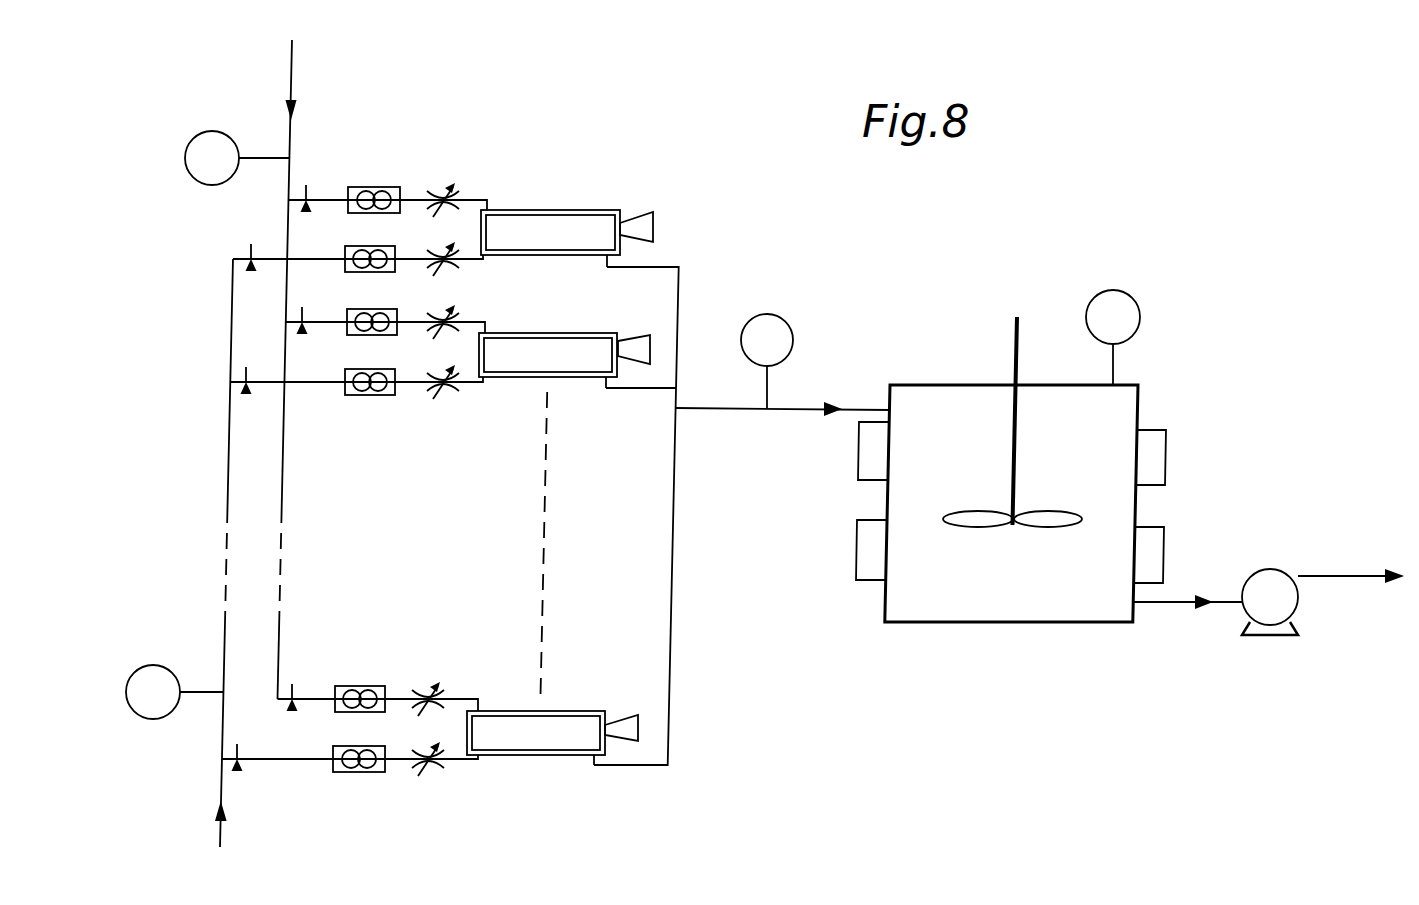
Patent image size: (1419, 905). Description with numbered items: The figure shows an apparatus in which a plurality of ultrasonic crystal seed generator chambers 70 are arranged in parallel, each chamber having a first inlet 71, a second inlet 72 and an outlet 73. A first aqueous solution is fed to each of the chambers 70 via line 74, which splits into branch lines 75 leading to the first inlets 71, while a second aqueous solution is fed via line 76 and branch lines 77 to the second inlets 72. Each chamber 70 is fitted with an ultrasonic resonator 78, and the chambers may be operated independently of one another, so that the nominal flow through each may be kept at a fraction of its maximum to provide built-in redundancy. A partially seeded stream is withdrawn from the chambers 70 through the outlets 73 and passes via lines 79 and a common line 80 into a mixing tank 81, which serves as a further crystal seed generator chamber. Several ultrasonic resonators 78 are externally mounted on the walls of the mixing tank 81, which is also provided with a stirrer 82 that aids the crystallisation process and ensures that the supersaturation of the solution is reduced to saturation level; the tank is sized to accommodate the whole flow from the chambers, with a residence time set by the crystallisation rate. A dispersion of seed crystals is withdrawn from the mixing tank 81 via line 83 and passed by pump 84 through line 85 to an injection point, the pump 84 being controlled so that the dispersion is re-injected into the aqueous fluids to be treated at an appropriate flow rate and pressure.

The ultrasonic crystal seed generator chamber 70 is at (560, 333).
The first inlet 71 is at (493, 210).
The second inlet 72 is at (497, 256).
The outlet 73 is at (602, 258).
The line 74 is at (293, 65).
The branch lines 75 is at (318, 193).
The line 76 is at (217, 833).
The branch lines 77 is at (298, 263).
The ultrasonic resonator 78 is at (653, 343).
The lines 79 is at (628, 268).
The line 80 is at (730, 410).
The mixing tank 81 is at (1140, 408).
The stirrer 82 is at (1018, 358).
The line 83 is at (1163, 608).
The pump 84 is at (1270, 583).
The line 85 is at (1327, 575).